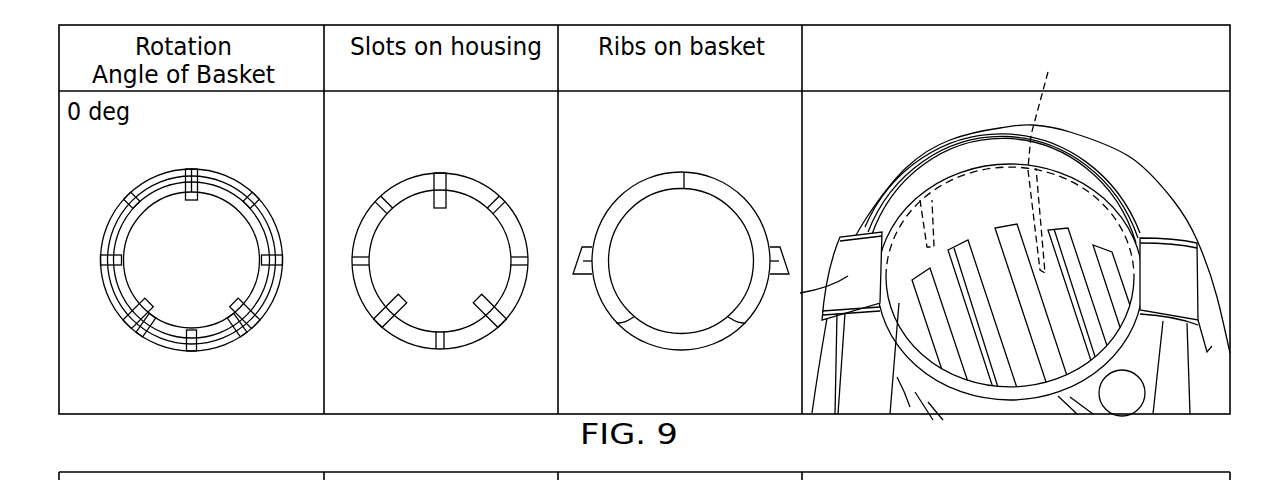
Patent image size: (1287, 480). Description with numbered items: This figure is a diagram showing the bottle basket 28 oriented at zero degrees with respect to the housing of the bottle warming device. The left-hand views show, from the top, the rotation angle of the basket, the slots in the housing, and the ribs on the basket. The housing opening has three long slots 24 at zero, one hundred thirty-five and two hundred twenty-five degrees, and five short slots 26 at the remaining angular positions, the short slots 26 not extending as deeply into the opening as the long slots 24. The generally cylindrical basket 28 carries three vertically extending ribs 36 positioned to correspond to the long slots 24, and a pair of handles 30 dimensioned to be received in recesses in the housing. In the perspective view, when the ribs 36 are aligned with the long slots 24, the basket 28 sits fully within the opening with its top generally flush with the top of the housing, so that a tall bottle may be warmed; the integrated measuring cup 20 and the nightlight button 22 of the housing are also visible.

The measuring cup 20 is at (926, 408).
The button 22 is at (1137, 400).
The long slots 24 is at (184, 172).
The short slots 26 is at (127, 186).
The bottle basket 28 is at (718, 160).
The handles 30 is at (789, 275).
The ribs 36 is at (193, 170).